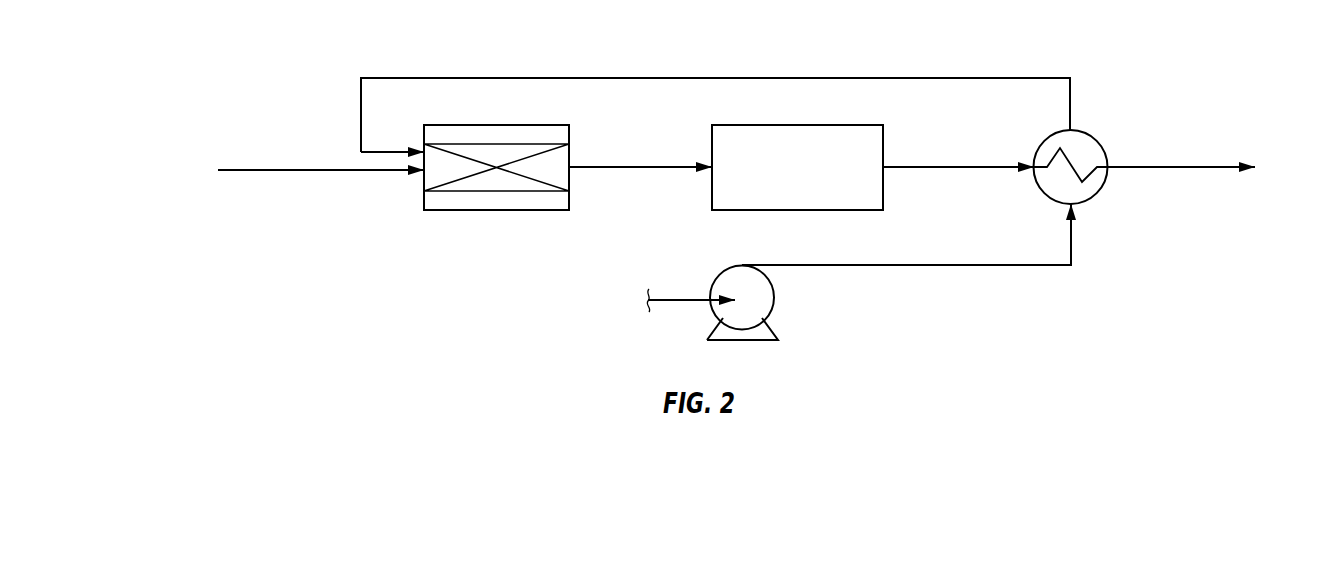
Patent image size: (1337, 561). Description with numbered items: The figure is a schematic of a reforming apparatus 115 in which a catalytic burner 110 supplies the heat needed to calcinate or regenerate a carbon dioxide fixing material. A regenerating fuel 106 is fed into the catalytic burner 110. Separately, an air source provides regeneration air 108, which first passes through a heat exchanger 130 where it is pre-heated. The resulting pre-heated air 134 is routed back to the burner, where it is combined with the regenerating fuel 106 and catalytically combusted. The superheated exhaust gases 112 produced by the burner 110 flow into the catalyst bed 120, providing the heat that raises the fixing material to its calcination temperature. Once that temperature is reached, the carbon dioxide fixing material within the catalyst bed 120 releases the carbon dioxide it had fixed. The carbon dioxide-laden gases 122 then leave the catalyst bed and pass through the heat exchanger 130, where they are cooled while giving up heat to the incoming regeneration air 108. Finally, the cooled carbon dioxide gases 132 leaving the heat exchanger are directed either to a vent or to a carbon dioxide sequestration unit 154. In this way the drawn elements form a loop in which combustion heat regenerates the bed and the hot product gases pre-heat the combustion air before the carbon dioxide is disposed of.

The regenerating fuel 106 is at (211, 178).
The regeneration air 108 is at (673, 301).
The catalytic burner 110 is at (492, 125).
The superheated exhaust gases 112 is at (630, 166).
The reforming apparatus 115 is at (437, 297).
The catalyst bed 120 is at (819, 180).
The carbon dioxide-laden gases 122 is at (950, 166).
The heat exchanger 130 is at (1098, 138).
The carbon dioxide gases 132 is at (1180, 166).
The pre-heated air 134 is at (975, 78).
The carbon dioxide sequestration unit 154 is at (1296, 180).